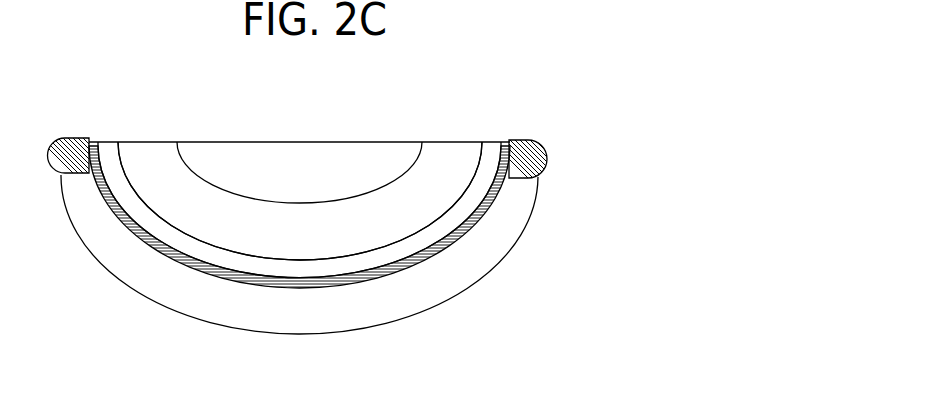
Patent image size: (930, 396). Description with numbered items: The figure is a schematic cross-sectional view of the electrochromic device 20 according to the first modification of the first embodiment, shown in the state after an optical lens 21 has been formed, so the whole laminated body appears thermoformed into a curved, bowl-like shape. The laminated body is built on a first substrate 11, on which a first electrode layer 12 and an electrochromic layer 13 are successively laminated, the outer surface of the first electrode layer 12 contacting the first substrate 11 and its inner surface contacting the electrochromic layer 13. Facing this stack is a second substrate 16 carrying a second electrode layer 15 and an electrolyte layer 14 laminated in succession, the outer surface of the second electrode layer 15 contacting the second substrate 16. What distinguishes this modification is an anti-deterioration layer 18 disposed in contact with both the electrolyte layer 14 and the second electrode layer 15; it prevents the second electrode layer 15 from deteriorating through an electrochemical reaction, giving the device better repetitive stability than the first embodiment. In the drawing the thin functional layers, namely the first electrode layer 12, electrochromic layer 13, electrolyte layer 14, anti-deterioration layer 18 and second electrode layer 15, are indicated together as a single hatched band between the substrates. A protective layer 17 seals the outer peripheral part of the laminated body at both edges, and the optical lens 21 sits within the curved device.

The electrochromic device 20 is at (357, 117).
The first substrate 11 is at (467, 274).
The first electrode layer 12 is at (410, 217).
The electrochromic layer 13 is at (410, 217).
The electrolyte layer 14 is at (410, 217).
The anti-deterioration layer 18 is at (410, 217).
The second electrode layer 15 is at (470, 222).
The second substrate 16 is at (492, 150).
The protective layer 17 is at (74, 138).
The optical lens 21 is at (438, 150).